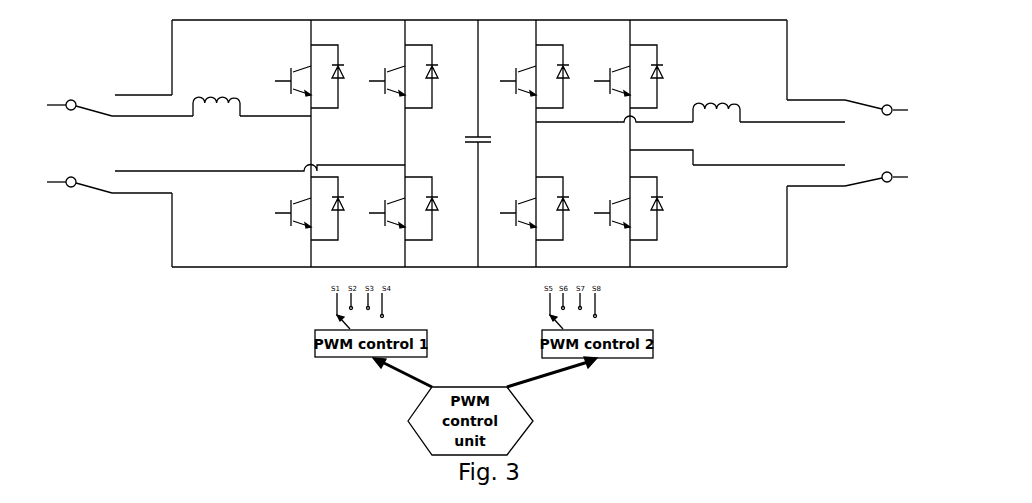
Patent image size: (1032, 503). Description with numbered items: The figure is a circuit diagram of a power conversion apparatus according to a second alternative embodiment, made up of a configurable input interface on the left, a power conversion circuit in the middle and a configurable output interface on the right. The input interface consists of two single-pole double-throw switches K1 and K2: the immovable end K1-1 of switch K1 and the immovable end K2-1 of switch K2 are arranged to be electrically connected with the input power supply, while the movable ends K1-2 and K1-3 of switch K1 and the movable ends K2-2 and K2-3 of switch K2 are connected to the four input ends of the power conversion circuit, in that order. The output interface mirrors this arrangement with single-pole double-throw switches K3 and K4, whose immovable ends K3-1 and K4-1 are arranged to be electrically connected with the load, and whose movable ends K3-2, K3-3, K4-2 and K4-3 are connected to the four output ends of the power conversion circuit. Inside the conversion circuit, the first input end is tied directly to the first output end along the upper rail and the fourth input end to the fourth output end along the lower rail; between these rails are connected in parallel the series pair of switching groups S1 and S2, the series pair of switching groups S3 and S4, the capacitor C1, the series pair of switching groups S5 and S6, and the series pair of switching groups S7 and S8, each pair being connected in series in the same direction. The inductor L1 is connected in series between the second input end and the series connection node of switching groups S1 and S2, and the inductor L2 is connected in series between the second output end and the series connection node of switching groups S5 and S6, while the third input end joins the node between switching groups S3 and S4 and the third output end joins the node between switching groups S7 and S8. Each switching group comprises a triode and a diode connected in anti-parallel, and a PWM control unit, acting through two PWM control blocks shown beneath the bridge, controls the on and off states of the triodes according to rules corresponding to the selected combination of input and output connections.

The single-pole double-throw switch K1 is at (96, 122).
The immovable end K1-1 is at (46, 105).
The movable end K1-2 is at (143, 90).
The movable end K1-3 is at (152, 123).
The single-pole double-throw switch K2 is at (96, 199).
The immovable end K2-1 is at (46, 182).
The movable end K2-2 is at (260, 166).
The movable end K2-3 is at (142, 200).
The single-pole double-throw switch K3 is at (863, 121).
The immovable end K3-1 is at (907, 110).
The movable end K3-2 is at (816, 95).
The movable end K3-3 is at (792, 127).
The single-pole double-throw switch K4 is at (863, 193).
The immovable end K4-1 is at (907, 177).
The movable end K4-2 is at (769, 164).
The movable end K4-3 is at (816, 193).
The inductor L1 is at (216, 94).
The inductor L2 is at (716, 101).
The capacitor C1 is at (468, 143).
The switching group S1 is at (301, 76).
The switching group S2 is at (301, 208).
The switching group S3 is at (395, 76).
The switching group S4 is at (395, 208).
The switching group S5 is at (526, 76).
The switching group S6 is at (526, 208).
The switching group S7 is at (623, 76).
The switching group S8 is at (623, 208).